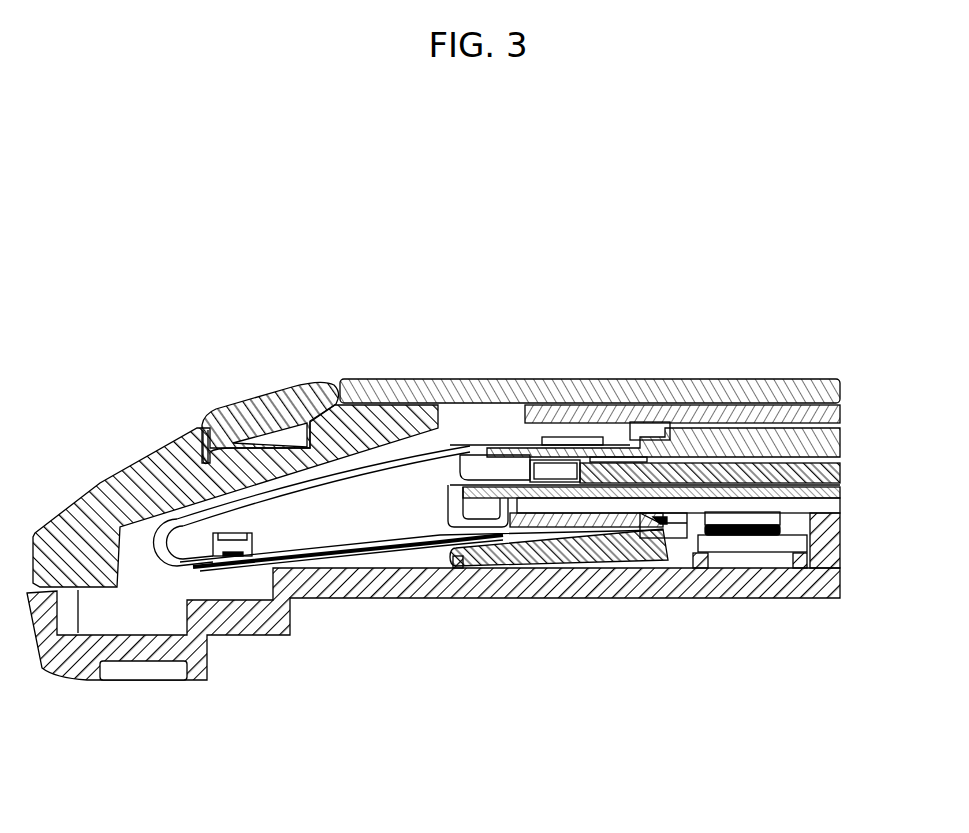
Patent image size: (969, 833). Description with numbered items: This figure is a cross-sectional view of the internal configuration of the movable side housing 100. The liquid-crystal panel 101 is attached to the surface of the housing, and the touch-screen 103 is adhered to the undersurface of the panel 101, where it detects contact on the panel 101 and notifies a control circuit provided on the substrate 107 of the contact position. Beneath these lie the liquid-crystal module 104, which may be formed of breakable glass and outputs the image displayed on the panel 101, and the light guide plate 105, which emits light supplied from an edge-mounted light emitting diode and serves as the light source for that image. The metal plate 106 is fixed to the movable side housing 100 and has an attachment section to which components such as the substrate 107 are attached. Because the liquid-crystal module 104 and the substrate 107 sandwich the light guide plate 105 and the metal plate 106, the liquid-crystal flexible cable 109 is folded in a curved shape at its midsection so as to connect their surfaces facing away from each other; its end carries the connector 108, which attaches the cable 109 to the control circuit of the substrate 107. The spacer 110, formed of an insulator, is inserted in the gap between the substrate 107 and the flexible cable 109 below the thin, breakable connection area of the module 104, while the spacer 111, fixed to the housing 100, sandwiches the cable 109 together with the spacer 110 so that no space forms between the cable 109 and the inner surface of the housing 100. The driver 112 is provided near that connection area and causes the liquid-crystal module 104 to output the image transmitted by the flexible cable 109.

The movable side housing 100 is at (174, 397).
The liquid-crystal panel 101 is at (840, 390).
The touch-screen 103 is at (838, 415).
The liquid-crystal module 104 is at (838, 445).
The light guide plate 105 is at (838, 473).
The metal plate 106 is at (838, 492).
The substrate 107 is at (838, 506).
The connector 108 is at (755, 545).
The liquid-crystal flexible cable 109 is at (420, 552).
The spacer 110 is at (660, 520).
The spacer 111 is at (611, 560).
The driver 112 is at (587, 437).